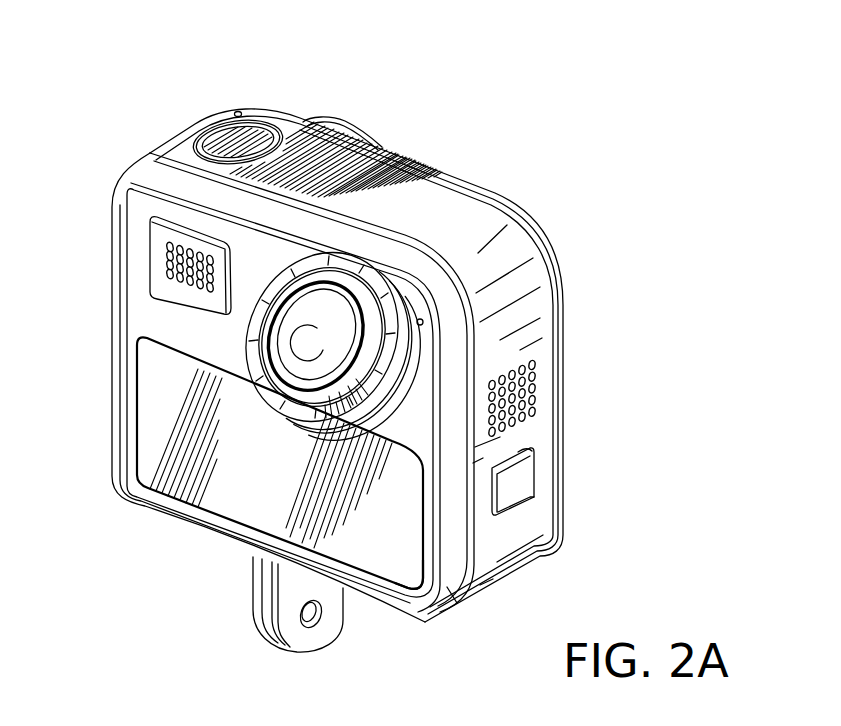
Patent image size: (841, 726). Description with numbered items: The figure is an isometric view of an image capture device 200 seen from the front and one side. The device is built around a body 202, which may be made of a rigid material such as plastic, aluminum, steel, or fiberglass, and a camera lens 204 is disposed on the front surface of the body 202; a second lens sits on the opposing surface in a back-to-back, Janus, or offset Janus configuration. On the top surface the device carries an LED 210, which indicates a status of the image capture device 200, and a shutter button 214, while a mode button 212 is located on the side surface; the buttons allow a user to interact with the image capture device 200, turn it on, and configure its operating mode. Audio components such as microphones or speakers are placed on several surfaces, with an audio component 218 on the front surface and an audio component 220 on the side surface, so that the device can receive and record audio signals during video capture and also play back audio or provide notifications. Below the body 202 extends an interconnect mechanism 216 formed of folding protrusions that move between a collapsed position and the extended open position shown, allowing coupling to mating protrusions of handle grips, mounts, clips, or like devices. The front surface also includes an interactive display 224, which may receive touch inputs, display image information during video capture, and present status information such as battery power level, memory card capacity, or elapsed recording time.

The image capture device 200 is at (607, 170).
The body 202 is at (112, 331).
The camera lens 204 is at (297, 364).
The LED 210 is at (238, 110).
The mode button 212 is at (523, 473).
The shutter button 214 is at (253, 132).
The interconnect mechanism 216 is at (287, 596).
The audio component 218 is at (168, 270).
The audio component 220 is at (533, 387).
The interactive display 224 is at (405, 567).